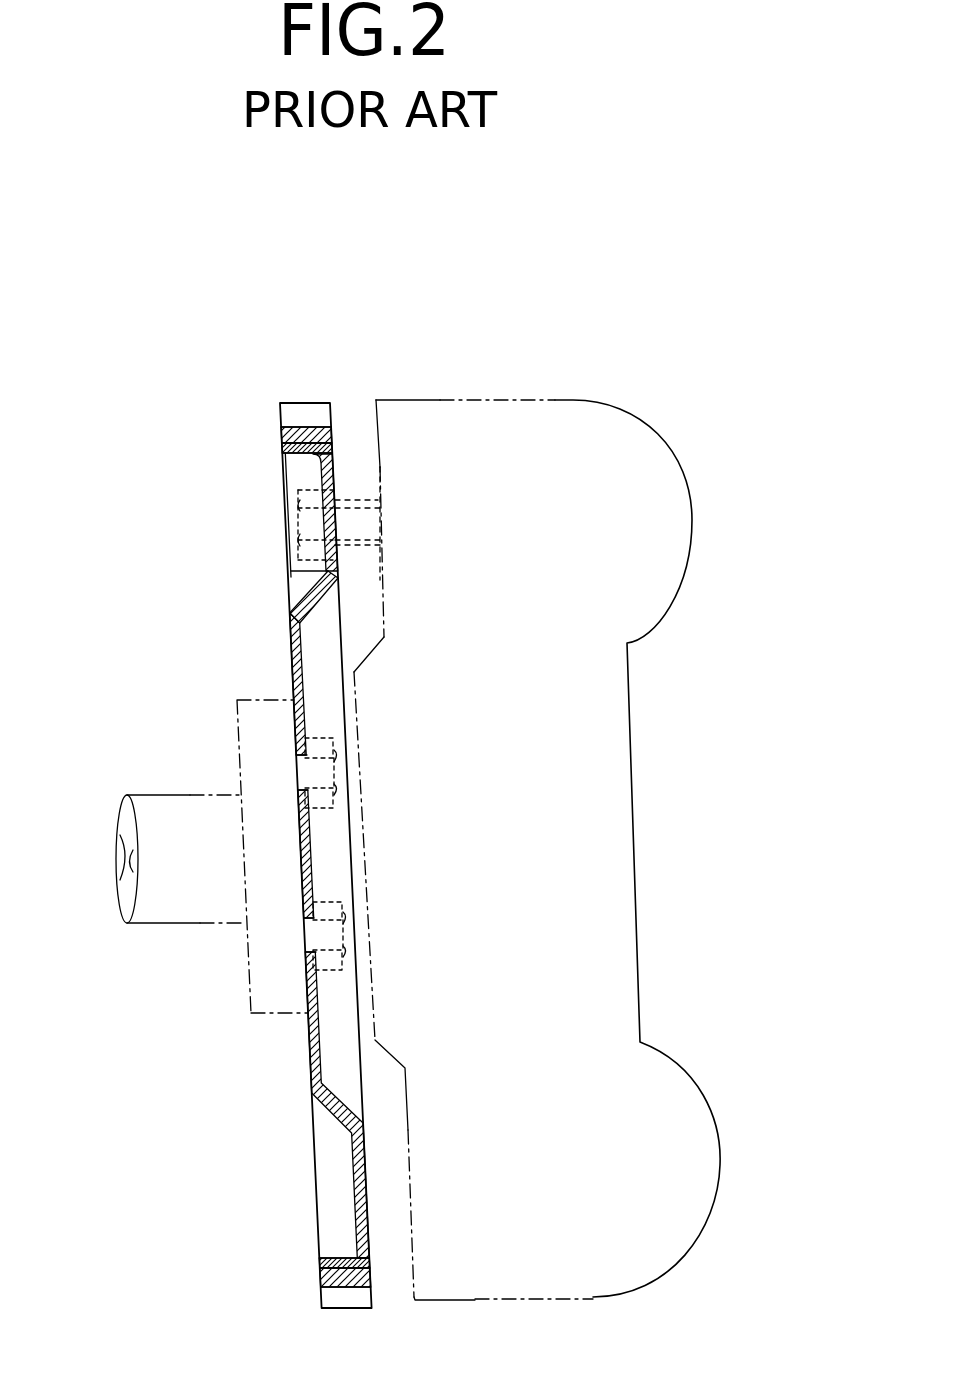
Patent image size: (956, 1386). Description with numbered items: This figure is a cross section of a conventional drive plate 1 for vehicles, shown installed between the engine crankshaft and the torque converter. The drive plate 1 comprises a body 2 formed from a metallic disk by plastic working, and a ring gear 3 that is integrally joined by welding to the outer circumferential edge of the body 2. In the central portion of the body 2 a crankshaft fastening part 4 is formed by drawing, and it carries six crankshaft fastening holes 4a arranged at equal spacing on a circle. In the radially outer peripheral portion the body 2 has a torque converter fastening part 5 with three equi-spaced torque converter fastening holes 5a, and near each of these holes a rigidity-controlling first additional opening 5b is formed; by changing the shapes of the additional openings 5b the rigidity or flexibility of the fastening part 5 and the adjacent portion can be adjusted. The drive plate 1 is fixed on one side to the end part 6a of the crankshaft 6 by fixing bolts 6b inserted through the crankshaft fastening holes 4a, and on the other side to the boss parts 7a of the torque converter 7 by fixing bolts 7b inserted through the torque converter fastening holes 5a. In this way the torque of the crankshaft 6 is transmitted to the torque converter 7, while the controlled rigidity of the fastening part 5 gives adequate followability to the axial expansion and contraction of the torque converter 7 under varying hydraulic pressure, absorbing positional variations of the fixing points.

The drive plate 1 is at (222, 328).
The body 2 is at (182, 562).
The ring gear 3 is at (302, 400).
The crankshaft fastening part 4 is at (293, 637).
The crankshaft fastening holes 4a is at (297, 772).
The torque converter fastening part 5 is at (300, 578).
The torque converter fastening holes 5a is at (332, 497).
The first additional openings 5b is at (332, 548).
The crankshaft 6 is at (125, 876).
The end part 6a is at (250, 993).
The fixing bolts 6b is at (333, 788).
The torque converter 7 is at (492, 400).
The boss parts 7a is at (353, 500).
The fixing bolts 7b is at (275, 464).